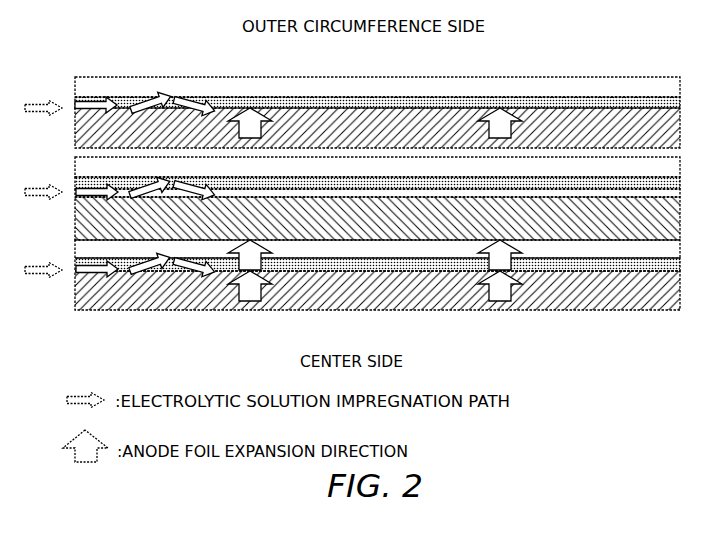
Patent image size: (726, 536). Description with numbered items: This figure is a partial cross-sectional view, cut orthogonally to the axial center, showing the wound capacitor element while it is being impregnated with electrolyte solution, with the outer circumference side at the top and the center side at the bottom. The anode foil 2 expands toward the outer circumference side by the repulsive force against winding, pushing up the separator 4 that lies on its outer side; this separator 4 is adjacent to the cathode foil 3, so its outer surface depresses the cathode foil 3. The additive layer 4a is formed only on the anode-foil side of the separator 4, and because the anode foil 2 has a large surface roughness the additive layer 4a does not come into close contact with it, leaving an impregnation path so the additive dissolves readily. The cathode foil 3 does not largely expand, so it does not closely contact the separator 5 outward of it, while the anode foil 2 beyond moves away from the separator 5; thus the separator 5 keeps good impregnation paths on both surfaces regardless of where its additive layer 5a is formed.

The anode foil 2 is at (452, 122).
The cathode foil 3 is at (323, 223).
The separator 4 is at (570, 88).
The additive layer 4a is at (527, 103).
The separator 5 is at (327, 167).
The additive layer 5a is at (281, 180).